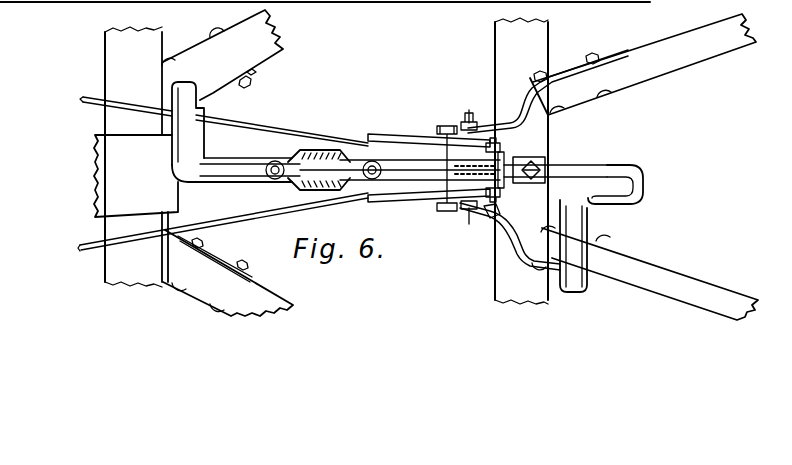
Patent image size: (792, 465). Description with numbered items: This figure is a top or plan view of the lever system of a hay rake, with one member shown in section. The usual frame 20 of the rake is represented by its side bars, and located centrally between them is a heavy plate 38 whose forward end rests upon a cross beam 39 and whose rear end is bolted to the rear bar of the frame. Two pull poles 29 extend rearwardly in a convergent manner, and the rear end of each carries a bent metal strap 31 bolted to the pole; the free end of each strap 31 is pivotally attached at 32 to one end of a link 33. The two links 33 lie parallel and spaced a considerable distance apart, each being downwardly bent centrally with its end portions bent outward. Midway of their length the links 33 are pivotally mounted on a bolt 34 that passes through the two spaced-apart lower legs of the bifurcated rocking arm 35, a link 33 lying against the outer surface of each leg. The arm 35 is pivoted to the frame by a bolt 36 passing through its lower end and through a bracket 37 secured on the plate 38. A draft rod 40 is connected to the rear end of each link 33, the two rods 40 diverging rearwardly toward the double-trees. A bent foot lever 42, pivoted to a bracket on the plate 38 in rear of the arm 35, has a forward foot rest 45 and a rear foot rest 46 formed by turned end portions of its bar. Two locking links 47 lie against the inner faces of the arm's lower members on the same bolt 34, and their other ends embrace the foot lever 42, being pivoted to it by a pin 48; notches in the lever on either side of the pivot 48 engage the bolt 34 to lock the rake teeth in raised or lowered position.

The frame 20 is at (136, 157).
The pull pole 29 is at (700, 48).
The bent metal strap 31 is at (522, 94).
The pivot 32 is at (469, 120).
The link 33 is at (398, 136).
The bolt 34 is at (432, 207).
The rocking arm 35 is at (338, 158).
The bolt 36 is at (494, 208).
The bracket 37 is at (554, 158).
The plate 38 is at (237, 182).
The cross beam 39 is at (512, 37).
The draft rod 40 is at (282, 130).
The foot lever 42 is at (590, 172).
The foot rest 45 is at (362, 190).
The foot rest 46 is at (186, 150).
The locking link 47 is at (447, 125).
The pivot 48 is at (505, 152).